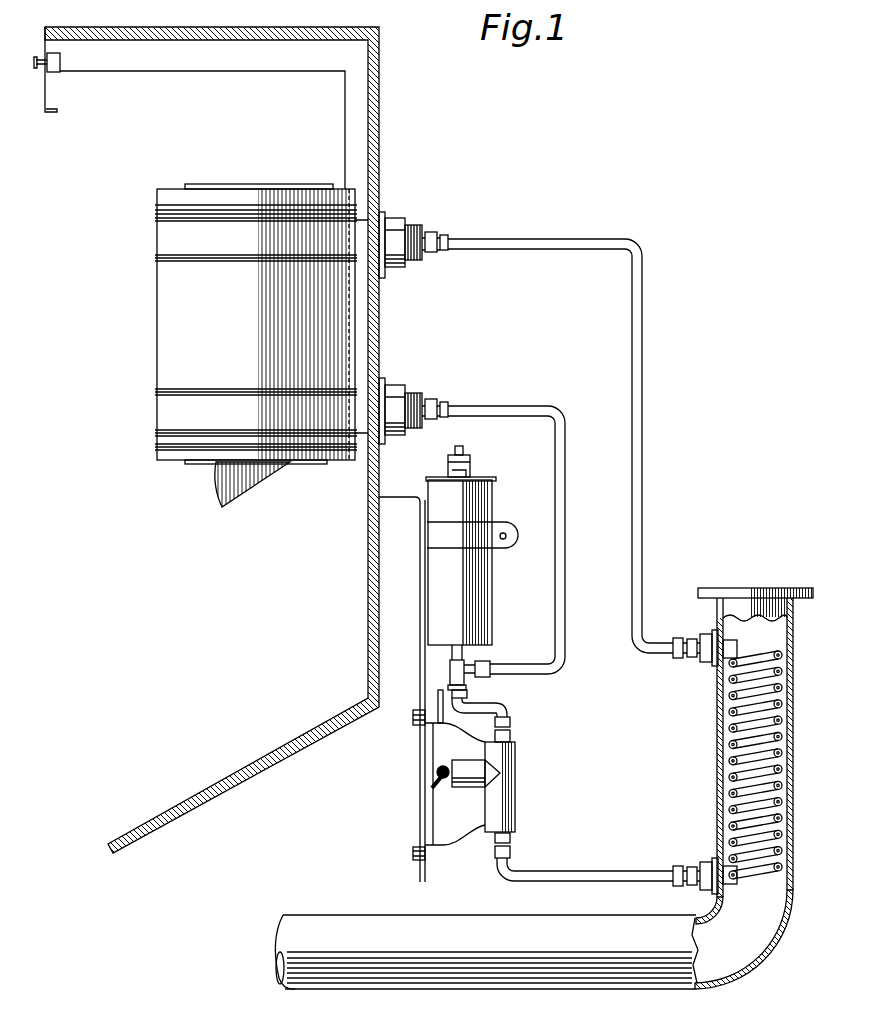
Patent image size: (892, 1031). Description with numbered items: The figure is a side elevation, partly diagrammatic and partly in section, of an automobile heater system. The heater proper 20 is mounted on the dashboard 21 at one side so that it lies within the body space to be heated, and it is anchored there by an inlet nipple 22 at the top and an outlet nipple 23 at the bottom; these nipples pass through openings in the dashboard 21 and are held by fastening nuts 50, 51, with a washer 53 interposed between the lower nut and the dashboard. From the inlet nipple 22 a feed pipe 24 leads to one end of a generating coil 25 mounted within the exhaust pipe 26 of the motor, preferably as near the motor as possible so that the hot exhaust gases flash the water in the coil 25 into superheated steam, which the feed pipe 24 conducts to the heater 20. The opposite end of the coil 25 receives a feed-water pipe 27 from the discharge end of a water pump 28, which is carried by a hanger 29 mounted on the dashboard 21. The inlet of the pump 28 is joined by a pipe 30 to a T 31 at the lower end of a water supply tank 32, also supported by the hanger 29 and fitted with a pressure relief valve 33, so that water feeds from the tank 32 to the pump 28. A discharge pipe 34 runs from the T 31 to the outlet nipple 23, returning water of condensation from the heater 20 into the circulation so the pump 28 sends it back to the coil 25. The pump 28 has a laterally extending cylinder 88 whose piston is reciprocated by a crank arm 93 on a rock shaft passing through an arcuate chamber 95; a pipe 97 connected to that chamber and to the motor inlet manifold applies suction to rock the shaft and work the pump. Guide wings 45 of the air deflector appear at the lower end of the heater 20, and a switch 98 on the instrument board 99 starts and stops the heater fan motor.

The heater proper 20 is at (175, 322).
The dashboard 21 is at (380, 155).
The inlet nipple 22 is at (418, 226).
The outlet nipple 23 is at (414, 393).
The feed pipe 24 is at (642, 400).
The generating coil 25 is at (718, 727).
The exhaust pipe 26 is at (571, 915).
The feed-water pipe 27 is at (612, 873).
The water pump 28 is at (516, 783).
The hanger 29 is at (423, 701).
The pipe 30 is at (506, 708).
The T 31 is at (470, 680).
The water supply tank 32 is at (475, 585).
The pressure relief valve 33 is at (471, 456).
The discharge pipe 34 is at (563, 562).
The guide wings 45 is at (230, 483).
The fastening nut 50 is at (395, 218).
The fastening nut 51 is at (391, 433).
The washer 53 is at (384, 378).
The cylinder 88 is at (466, 788).
The crank arm 93 is at (431, 781).
The arcuate chamber 95 is at (447, 750).
The pipe 97 is at (438, 696).
The switch 98 is at (60, 68).
The instrument board 99 is at (50, 109).